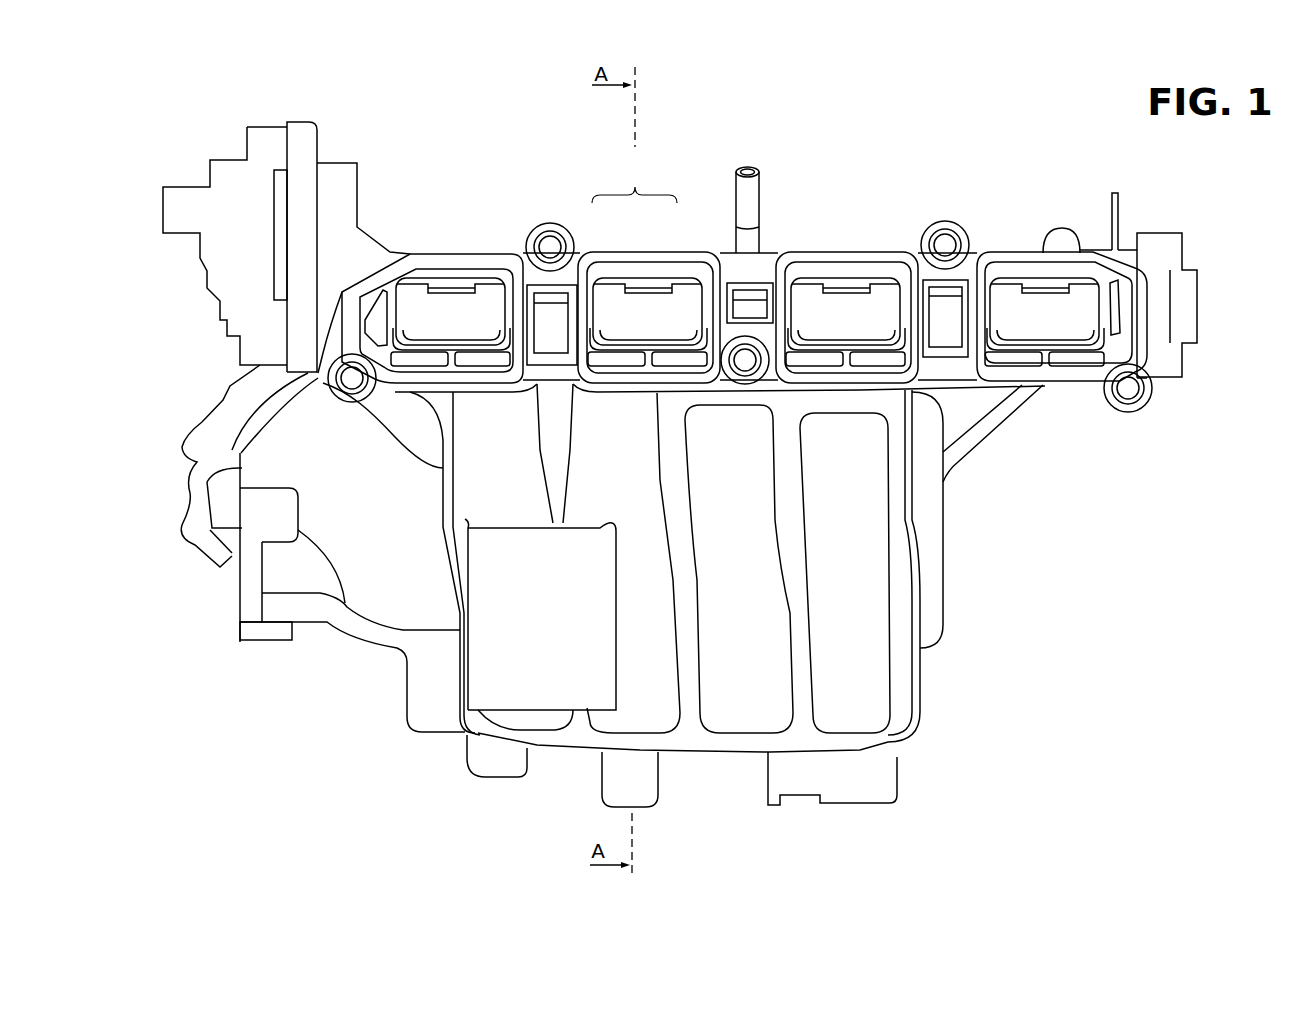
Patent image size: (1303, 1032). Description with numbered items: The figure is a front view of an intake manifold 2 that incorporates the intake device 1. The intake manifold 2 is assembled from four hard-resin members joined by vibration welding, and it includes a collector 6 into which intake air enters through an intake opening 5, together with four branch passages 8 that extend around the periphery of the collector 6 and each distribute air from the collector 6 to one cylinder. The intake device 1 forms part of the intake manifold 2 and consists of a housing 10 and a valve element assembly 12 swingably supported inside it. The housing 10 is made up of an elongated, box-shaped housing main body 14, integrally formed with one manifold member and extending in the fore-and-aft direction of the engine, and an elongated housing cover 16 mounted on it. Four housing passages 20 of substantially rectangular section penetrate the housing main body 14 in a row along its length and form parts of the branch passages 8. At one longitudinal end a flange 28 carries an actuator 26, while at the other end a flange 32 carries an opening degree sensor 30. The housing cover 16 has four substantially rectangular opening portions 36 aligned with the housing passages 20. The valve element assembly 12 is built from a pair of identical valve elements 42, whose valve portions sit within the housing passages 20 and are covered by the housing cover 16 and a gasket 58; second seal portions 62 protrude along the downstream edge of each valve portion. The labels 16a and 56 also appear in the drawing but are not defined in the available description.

The intake device 1 is at (1062, 252).
The intake manifold 2 is at (1034, 137).
The intake opening 5 is at (202, 421).
The collector 6 is at (373, 590).
The branch passages 8 is at (877, 665).
The housing 10 is at (634, 180).
The valve element assembly 12 is at (853, 300).
The housing main body 14 is at (603, 260).
The housing cover 16 is at (648, 290).
The flange recess 16a is at (552, 283).
The housing passages 20 is at (1077, 323).
The actuator 26 is at (182, 203).
The flange 28 is at (336, 188).
The opening degree sensor 30 is at (1183, 303).
The flange 32 is at (1163, 248).
The opening portions 36 is at (400, 320).
The valve elements 42 is at (517, 257).
The port rib 56 is at (832, 287).
The gasket 58 is at (455, 267).
The second seal portions 62 is at (1010, 280).